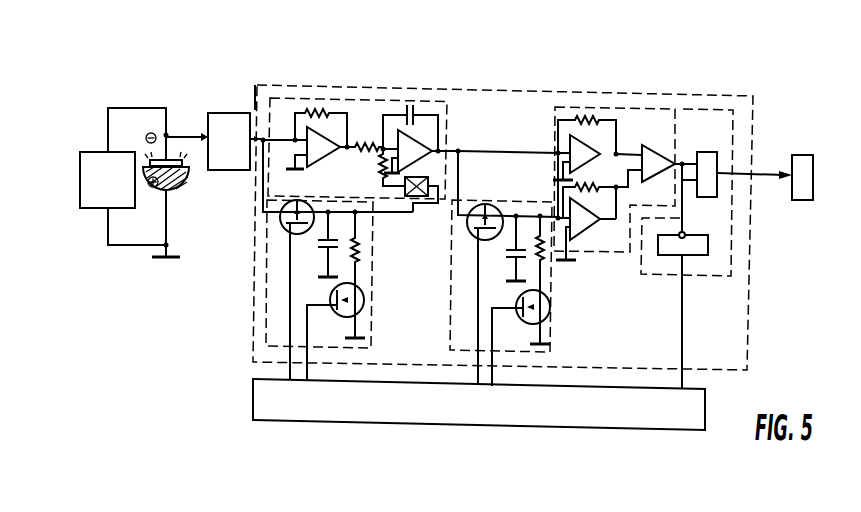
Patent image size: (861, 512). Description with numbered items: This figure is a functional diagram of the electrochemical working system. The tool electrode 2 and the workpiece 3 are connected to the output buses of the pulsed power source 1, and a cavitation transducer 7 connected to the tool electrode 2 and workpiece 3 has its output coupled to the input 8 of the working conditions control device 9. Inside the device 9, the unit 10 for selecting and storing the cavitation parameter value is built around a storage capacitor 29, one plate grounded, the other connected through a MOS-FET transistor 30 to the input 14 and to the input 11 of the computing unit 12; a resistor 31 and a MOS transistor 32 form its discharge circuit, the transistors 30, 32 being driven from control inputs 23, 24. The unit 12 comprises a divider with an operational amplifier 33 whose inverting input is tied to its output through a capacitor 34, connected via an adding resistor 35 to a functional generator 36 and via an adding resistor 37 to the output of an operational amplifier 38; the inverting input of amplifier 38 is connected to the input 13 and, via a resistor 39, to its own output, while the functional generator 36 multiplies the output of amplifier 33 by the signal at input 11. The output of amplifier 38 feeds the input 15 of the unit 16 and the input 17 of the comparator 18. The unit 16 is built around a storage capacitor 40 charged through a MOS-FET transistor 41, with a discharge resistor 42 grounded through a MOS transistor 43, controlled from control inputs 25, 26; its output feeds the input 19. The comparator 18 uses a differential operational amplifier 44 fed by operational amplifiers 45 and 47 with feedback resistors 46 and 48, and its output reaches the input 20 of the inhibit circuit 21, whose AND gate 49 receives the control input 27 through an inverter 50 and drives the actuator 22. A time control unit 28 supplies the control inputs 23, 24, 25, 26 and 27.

The pulsed power source 1 is at (107, 180).
The tool electrode 2 is at (175, 161).
The workpiece 3 is at (179, 190).
The cavitation transducer 7 is at (229, 141).
The input of the working conditions control device 8 is at (254, 110).
The working conditions control device 9 is at (501, 87).
The unit for selecting and storing the cavitation parameter value 10 is at (375, 317).
The input of the computing unit 11 is at (437, 210).
The unit for calculating the relative value of the cavitation parameter function 12 is at (448, 112).
The input of the computing unit 13 is at (287, 120).
The input of the selection and storage unit 14 is at (266, 213).
The input of the selection and storage unit 15 is at (459, 198).
The unit for selecting and storing the relative value of the cavitation parameter fu 16 is at (450, 336).
The input of the comparator 17 is at (540, 155).
The unit for comparing the actual relative value of the cavitation parameter functio 18 is at (553, 112).
The input of the comparator 19 is at (554, 207).
The input of the inhibit circuit 20 is at (681, 160).
The inhibit circuit 21 is at (640, 258).
The actuator 22 is at (805, 201).
The control input of the selection and storage unit 23 is at (260, 348).
The control input of the selection and storage unit 24 is at (307, 348).
The control input of the selection and storage unit 25 is at (477, 348).
The control input of the selection and storage unit 26 is at (495, 350).
The control input of the inhibit circuit 27 is at (682, 285).
The time control unit 28 is at (479, 404).
The storage capacitor 29 is at (318, 250).
The MOS-FET transistor 30 is at (289, 240).
The resistor 31 is at (358, 255).
The MOS transistor 32 is at (365, 297).
The operational amplifier 33 is at (410, 144).
The capacitor 34 is at (412, 104).
The adding resistor 35 is at (381, 176).
The functional generator 36 is at (412, 204).
The adding resistor 37 is at (358, 145).
The operational amplifier 38 is at (331, 163).
The resistor 39 is at (320, 110).
The storage capacitor 40 is at (511, 254).
The MOS-FET transistor 41 is at (478, 242).
The resistor 42 is at (538, 251).
The MOS transistor 43 is at (550, 310).
The differential operational amplifier 44 is at (651, 176).
The operational amplifier 45 is at (586, 150).
The resistor 46 is at (584, 118).
The operational amplifier 47 is at (590, 229).
The resistor 48 is at (586, 186).
The AND gate 49 is at (705, 197).
The inverter 50 is at (700, 258).